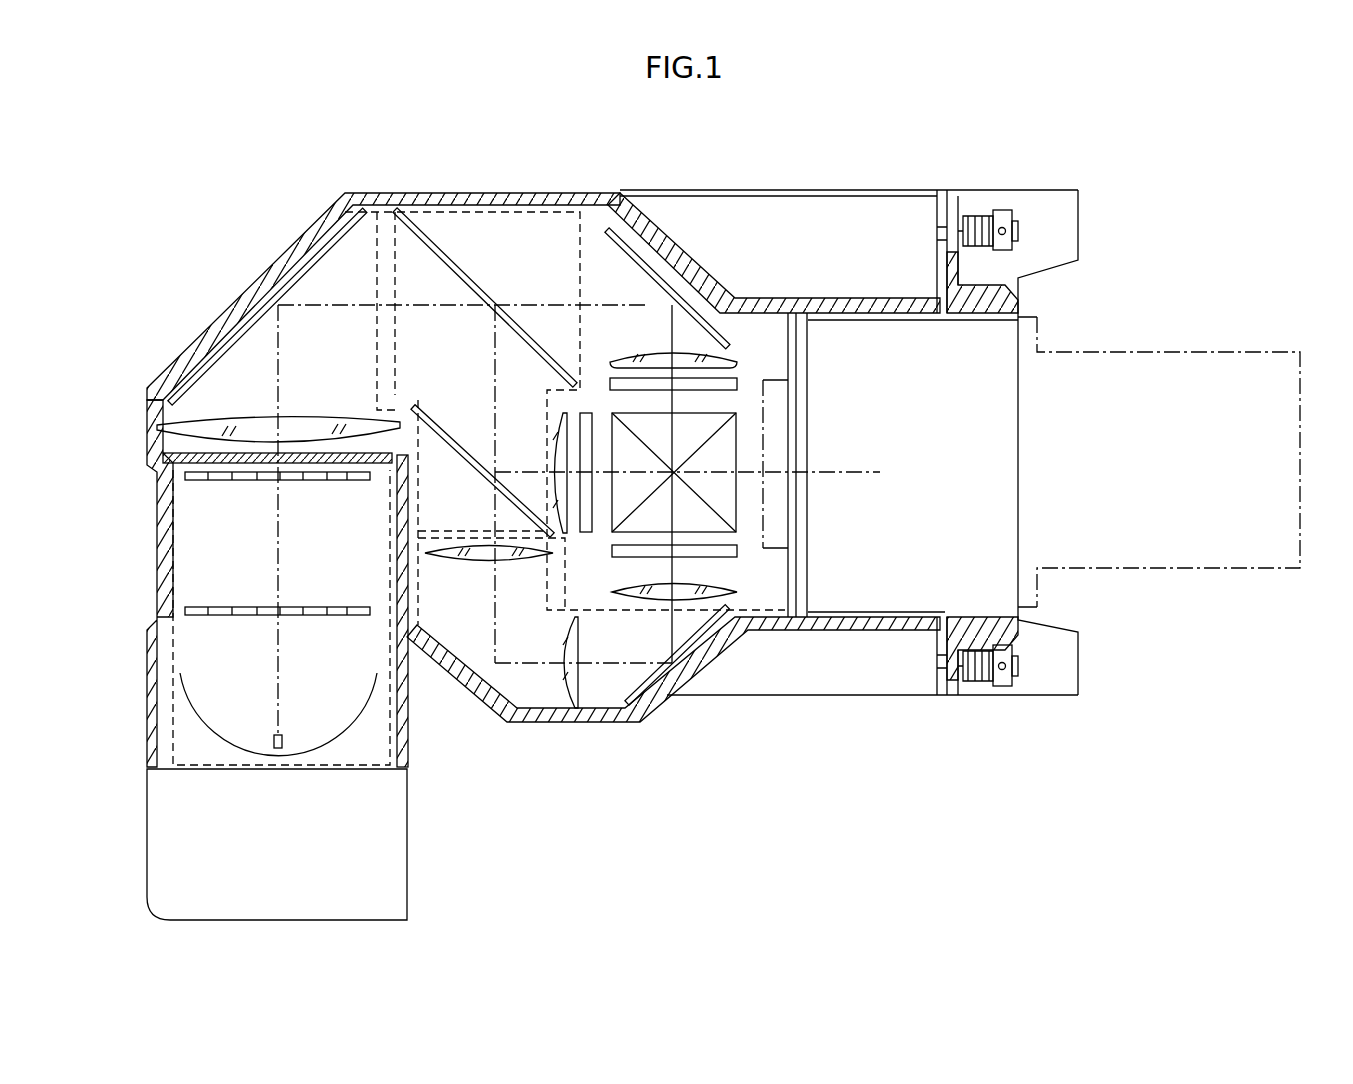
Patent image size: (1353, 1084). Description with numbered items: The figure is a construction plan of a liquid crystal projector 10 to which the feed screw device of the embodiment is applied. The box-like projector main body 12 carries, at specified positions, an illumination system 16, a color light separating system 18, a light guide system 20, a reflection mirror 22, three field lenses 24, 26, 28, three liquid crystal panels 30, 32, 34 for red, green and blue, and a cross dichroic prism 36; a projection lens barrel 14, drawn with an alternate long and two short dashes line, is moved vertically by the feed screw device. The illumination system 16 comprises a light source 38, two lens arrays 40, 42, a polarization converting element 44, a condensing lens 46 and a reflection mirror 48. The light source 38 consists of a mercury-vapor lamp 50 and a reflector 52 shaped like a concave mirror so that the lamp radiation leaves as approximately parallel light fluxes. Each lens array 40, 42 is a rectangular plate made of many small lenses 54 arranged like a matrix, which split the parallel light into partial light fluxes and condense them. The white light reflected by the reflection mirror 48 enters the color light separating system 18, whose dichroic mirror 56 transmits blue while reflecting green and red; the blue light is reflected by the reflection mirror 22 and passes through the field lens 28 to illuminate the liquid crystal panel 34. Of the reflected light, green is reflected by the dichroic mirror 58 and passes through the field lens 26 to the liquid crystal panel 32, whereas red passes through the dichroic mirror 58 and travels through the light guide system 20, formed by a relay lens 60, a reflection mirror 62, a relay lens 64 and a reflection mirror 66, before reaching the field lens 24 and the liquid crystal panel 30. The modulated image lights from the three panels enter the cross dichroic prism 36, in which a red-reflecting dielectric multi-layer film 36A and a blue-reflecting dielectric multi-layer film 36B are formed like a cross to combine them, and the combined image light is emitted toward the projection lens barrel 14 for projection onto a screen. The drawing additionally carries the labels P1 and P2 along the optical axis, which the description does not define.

The liquid crystal projector 10 is at (696, 504).
The projector main body 12 is at (910, 188).
The projection lens barrel 14 is at (1095, 442).
The illumination system 16 is at (439, 566).
The color light separating system 18 is at (520, 205).
The light guide system 20 is at (467, 667).
The reflection mirror 22 is at (645, 270).
The field lens 24 is at (733, 603).
The field lens 26 is at (563, 522).
The field lens 28 is at (625, 356).
The liquid crystal panel for R 30 is at (735, 550).
The liquid crystal panel for G 32 is at (585, 412).
The liquid crystal panel for B 34 is at (740, 385).
The cross dichroic prism 36 is at (705, 478).
The dielectric multi-layer film of red reflection 36A is at (655, 498).
The dielectric multi-layer film of blue reflection 36B is at (648, 447).
The light source 38 is at (218, 745).
The lens array 40 is at (311, 605).
The lens array 42 is at (337, 485).
The polarization converting element 44 is at (250, 440).
The condensing lens 46 is at (340, 438).
The reflection mirror 48 is at (338, 242).
The mercury-vapor lamp 50 is at (283, 742).
The reflector 52 is at (192, 704).
The small lenses 54 is at (246, 482).
The dichroic mirror 56 is at (432, 248).
The dichroic mirror 58 is at (450, 437).
The relay lens 60 is at (532, 562).
The reflection mirror 62 is at (455, 622).
The relay lens 64 is at (558, 645).
The reflection mirror 66 is at (643, 680).
The optical axis position P1 is at (860, 470).
The optical axis position P2 is at (1237, 448).